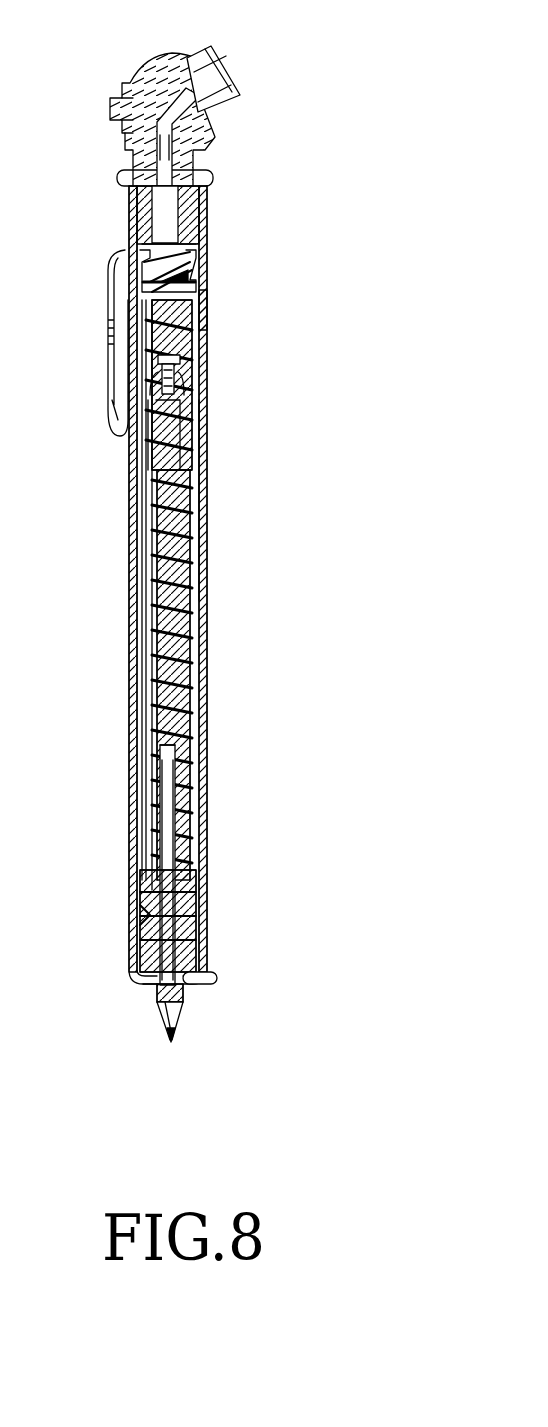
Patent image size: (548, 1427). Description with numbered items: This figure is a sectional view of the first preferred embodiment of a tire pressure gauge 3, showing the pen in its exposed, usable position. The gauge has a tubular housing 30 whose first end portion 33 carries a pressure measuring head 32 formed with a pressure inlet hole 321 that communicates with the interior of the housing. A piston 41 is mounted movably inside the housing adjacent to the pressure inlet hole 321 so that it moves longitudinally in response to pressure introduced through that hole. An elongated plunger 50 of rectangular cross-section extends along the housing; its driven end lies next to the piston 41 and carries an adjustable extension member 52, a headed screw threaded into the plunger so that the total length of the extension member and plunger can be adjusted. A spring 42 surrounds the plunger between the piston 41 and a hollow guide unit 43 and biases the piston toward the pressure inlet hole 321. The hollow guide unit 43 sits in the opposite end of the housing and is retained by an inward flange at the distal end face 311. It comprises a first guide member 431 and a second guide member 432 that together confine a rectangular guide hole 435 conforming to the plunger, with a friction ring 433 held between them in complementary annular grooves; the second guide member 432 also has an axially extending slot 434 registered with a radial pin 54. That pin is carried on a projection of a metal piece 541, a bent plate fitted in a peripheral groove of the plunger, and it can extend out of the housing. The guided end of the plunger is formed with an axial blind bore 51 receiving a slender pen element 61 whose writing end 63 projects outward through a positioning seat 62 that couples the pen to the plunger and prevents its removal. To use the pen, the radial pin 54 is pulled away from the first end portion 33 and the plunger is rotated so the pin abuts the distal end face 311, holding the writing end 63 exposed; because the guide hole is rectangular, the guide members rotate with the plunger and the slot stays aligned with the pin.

The tire pressure gauge 3 is at (205, 555).
The tubular housing 30 is at (205, 505).
The pressure measuring head 32 is at (145, 68).
The pressure inlet hole 321 is at (228, 62).
The first end portion 33 is at (207, 305).
The piston 41 is at (200, 248).
The spring 42 is at (190, 460).
The hollow guide unit 43 is at (240, 922).
The first guide member 431 is at (192, 878).
The second guide member 432 is at (219, 959).
The friction ring 433 is at (192, 905).
The axially extending slot 434 is at (188, 924).
The rectangular guide hole 435 is at (137, 915).
The elongated plunger 50 is at (185, 615).
The axial blind bore 51 is at (170, 755).
The adjustable extension member 52 is at (180, 365).
The radial pin 54 is at (205, 982).
The metal piece 541 is at (157, 990).
The pen element 61 is at (168, 800).
The positioning seat 62 is at (178, 1028).
The writing end 63 is at (174, 1042).
The distal end face 311 is at (150, 985).